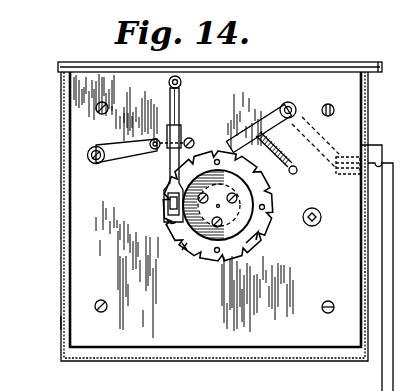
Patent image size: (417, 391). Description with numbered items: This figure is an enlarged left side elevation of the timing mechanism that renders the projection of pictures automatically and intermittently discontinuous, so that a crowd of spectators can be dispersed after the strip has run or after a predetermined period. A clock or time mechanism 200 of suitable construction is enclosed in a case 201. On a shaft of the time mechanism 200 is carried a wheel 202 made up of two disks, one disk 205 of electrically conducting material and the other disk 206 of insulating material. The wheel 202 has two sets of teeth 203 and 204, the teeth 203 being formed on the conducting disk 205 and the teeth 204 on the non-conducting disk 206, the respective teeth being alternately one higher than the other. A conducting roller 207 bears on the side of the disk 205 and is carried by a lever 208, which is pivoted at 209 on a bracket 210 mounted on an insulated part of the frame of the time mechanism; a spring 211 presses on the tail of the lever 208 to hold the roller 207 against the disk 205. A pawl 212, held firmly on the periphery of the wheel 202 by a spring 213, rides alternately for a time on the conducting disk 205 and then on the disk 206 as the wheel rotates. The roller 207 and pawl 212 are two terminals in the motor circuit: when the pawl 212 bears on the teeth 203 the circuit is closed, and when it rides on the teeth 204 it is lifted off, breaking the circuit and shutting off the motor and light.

The clock or time mechanism 200 is at (290, 344).
The case 201 is at (62, 321).
The wheel 202 is at (248, 208).
The teeth 203 is at (180, 250).
The teeth 204 is at (270, 172).
The disk 205 is at (176, 224).
The disk 206 is at (278, 231).
The conducting roller 207 is at (168, 200).
The lever 208 is at (170, 166).
The pivot 209 is at (191, 138).
The bracket 210 is at (155, 138).
The spring 211 is at (170, 96).
The pawl 212 is at (265, 116).
The spring 213 is at (298, 159).